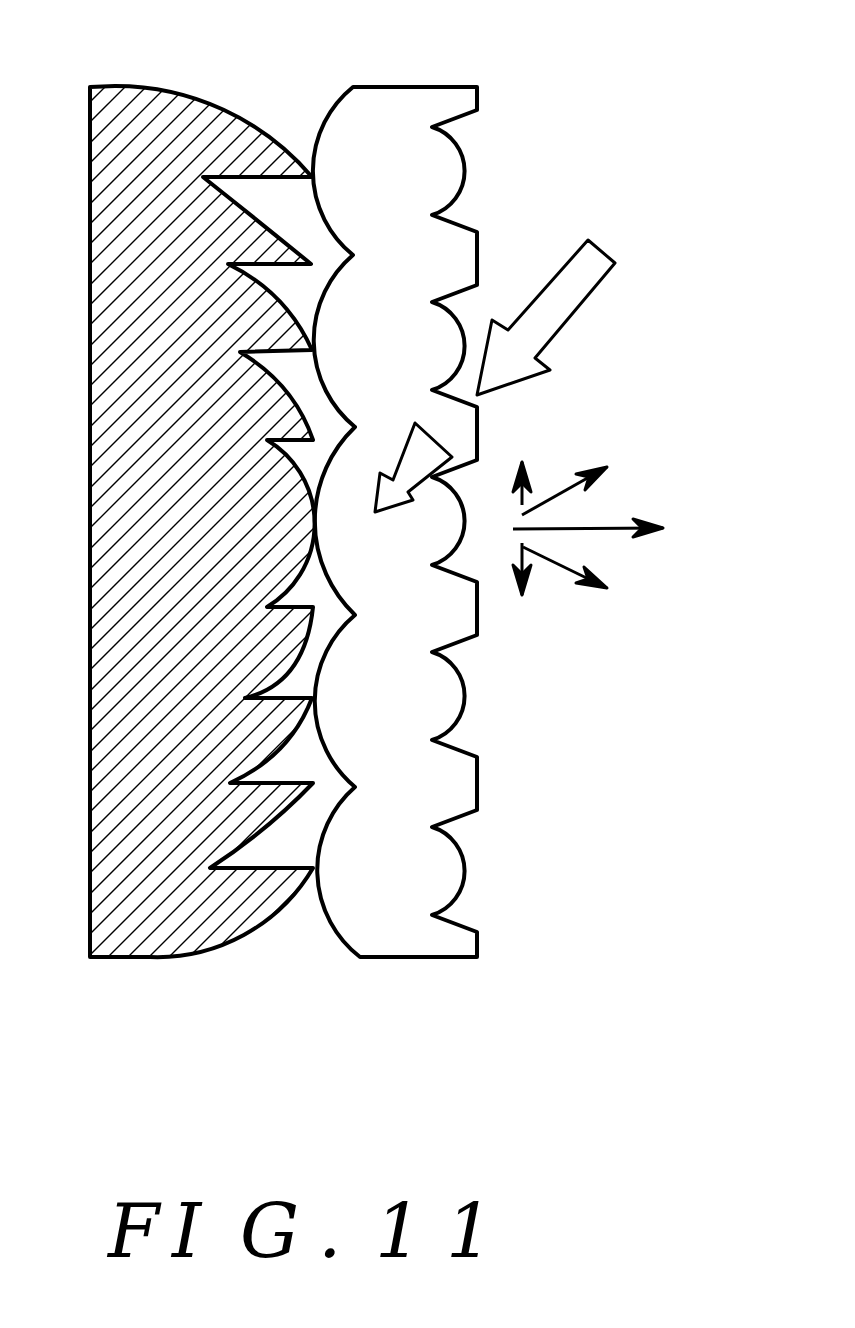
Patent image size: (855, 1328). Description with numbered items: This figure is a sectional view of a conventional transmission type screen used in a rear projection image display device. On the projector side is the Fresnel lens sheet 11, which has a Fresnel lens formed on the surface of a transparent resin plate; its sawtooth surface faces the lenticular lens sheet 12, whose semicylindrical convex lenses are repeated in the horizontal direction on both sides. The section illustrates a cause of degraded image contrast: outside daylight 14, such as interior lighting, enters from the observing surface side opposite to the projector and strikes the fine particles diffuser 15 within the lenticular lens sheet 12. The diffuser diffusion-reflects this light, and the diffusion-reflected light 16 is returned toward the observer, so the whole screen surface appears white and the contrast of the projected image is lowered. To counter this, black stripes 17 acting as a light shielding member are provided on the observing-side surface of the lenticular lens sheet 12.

The Fresnel lens sheet 11 is at (132, 110).
The lenticular lens sheet 12 is at (373, 115).
The outside daylight 14 is at (592, 273).
The fine particles diffuser 15 is at (378, 937).
The diffusion-reflected light 16 is at (600, 527).
The black stripes 17 is at (453, 782).